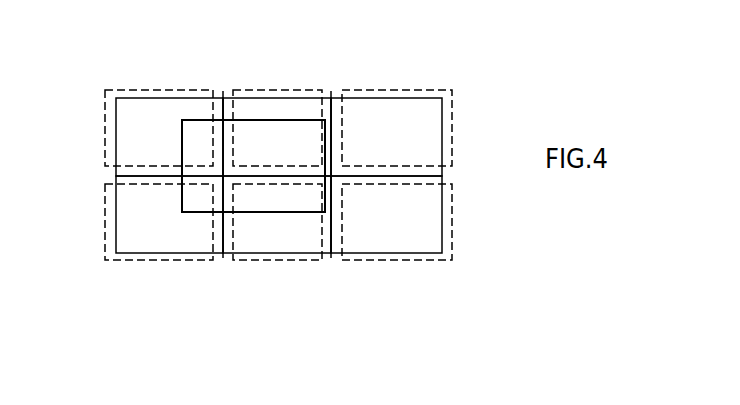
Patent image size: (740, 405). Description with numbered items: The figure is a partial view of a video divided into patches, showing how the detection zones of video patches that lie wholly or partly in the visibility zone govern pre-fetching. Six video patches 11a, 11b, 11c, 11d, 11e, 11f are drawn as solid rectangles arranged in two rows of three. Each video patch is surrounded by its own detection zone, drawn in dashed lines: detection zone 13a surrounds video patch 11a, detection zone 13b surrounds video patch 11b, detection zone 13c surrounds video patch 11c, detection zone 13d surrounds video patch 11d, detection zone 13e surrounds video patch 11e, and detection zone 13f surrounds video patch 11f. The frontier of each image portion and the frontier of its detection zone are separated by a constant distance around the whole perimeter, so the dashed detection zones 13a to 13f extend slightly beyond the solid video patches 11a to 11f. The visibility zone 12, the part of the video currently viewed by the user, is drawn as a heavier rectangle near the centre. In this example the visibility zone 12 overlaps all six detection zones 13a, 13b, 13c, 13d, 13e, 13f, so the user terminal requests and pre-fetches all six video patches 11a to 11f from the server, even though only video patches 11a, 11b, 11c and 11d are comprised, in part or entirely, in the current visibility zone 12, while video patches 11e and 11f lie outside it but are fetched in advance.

The video patch 11a is at (138, 137).
The video patch 11b is at (138, 215).
The video patch 11c is at (298, 108).
The video patch 11d is at (283, 238).
The video patch 11e is at (423, 133).
The video patch 11f is at (423, 223).
The visibility zone 12 is at (270, 120).
The detection zone 13a is at (150, 90).
The detection zone 13b is at (158, 262).
The detection zone 13c is at (270, 90).
The detection zone 13d is at (278, 262).
The detection zone 13e is at (405, 90).
The detection zone 13f is at (405, 262).